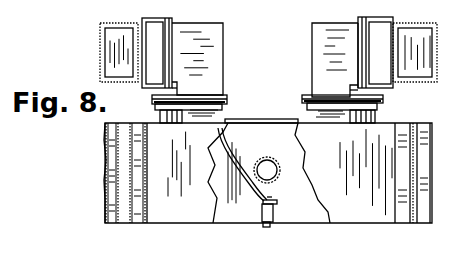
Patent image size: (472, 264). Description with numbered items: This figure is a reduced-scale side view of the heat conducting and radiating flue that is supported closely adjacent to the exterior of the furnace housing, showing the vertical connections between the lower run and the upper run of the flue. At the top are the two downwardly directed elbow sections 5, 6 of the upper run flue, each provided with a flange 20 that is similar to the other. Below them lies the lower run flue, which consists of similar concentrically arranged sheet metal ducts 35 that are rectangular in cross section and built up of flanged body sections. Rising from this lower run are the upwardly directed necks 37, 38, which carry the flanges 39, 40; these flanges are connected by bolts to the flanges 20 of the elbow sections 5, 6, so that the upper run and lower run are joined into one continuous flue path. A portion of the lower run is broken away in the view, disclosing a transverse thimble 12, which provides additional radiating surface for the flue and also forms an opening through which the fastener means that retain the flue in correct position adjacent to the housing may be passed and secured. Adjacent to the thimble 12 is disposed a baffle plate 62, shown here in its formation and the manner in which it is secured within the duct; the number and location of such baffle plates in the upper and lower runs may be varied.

The elbow section 5 is at (312, 62).
The elbow section 6 is at (223, 49).
The transverse thimble 12 is at (274, 148).
The flange 20 is at (383, 98).
The sheet metal duct 35 is at (183, 221).
The upwardly directed neck 37 is at (300, 117).
The upwardly directed neck 38 is at (226, 118).
The flange 39 is at (378, 107).
The flange 40 is at (160, 108).
The baffle plate 62 is at (278, 194).